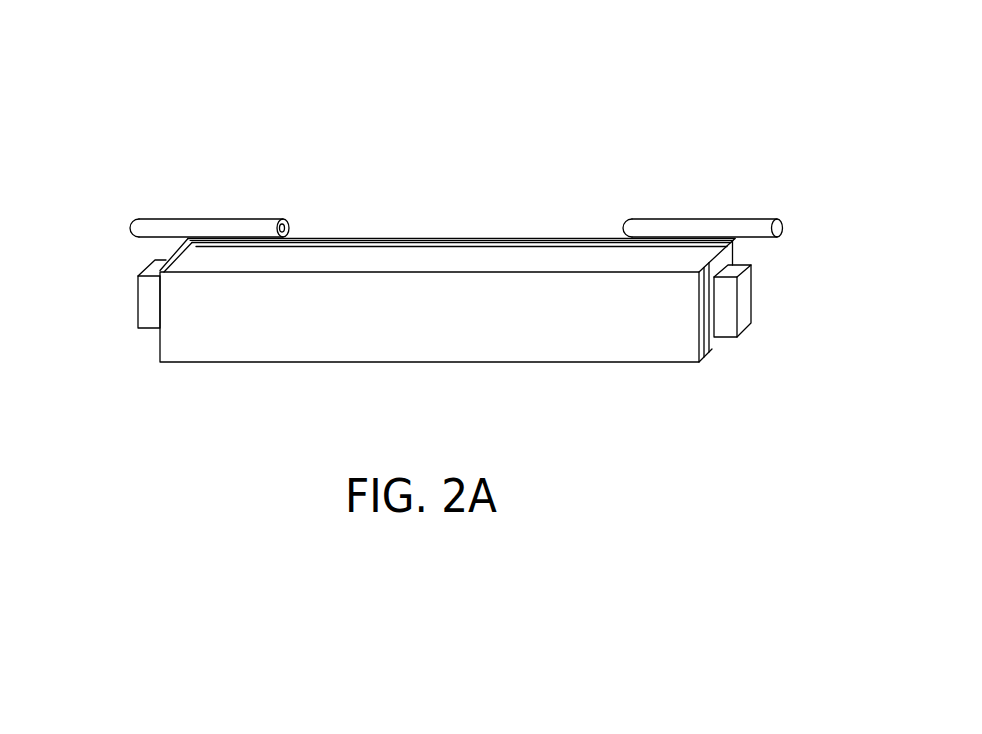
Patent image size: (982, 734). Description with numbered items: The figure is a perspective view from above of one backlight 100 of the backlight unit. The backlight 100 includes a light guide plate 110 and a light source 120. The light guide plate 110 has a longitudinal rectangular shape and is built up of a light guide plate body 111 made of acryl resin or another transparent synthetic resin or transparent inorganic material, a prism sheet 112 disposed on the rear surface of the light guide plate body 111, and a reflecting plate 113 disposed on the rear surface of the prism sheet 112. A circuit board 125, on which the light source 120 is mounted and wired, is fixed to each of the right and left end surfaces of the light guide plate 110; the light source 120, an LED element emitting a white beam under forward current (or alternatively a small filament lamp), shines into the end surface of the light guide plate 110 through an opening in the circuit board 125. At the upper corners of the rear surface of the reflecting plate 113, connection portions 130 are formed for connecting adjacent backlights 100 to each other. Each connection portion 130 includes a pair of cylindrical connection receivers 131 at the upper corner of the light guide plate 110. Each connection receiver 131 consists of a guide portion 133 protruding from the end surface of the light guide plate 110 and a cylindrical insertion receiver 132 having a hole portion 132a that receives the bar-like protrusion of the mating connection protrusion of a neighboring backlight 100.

The backlight 100 is at (773, 70).
The light guide plate 110 is at (547, 158).
The light guide plate body 111 is at (395, 250).
The prism sheet 112 is at (455, 246).
The reflecting plate 113 is at (517, 242).
The light source 120 is at (137, 307).
The circuit board 125 is at (168, 247).
The connection portion 130 is at (256, 106).
The connection receiver 131 is at (343, 158).
The insertion receiver 132 is at (247, 218).
The hole portion 132a is at (286, 227).
The guide portion 133 is at (188, 218).